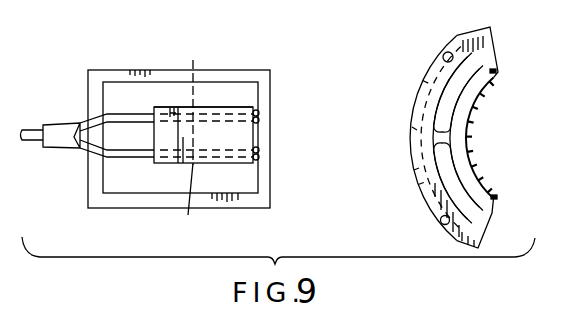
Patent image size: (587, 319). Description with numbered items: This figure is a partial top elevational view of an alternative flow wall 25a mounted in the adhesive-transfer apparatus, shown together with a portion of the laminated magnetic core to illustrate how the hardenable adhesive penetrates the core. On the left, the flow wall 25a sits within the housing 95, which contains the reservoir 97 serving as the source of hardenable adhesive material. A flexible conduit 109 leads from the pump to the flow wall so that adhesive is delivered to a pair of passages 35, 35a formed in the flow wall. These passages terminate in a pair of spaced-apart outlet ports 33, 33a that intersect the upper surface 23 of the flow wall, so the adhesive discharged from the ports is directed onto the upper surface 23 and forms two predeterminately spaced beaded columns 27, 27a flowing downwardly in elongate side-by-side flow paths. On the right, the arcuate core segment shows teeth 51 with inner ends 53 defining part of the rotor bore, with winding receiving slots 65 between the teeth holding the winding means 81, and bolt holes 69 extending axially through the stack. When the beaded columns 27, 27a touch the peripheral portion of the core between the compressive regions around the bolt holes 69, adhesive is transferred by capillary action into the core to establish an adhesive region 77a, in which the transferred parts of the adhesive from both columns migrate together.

The upper surface 23 is at (253, 133).
The flow wall 25a is at (228, 103).
The beaded column 27 is at (259, 119).
The beaded column 27a is at (259, 152).
The outlet port 33 is at (259, 111).
The outlet port 33a is at (259, 159).
The passage 35 is at (190, 102).
The passage 35a is at (184, 200).
The teeth 51 is at (494, 73).
The inner ends 53 is at (493, 197).
The winding receiving slots 65 is at (472, 96).
The bolt holes 69 is at (446, 52).
The adhesive region 77a is at (424, 178).
The winding means 81 is at (445, 80).
The housing 95 is at (147, 70).
The reservoir 97 is at (107, 80).
The flexible conduit 109 is at (38, 142).